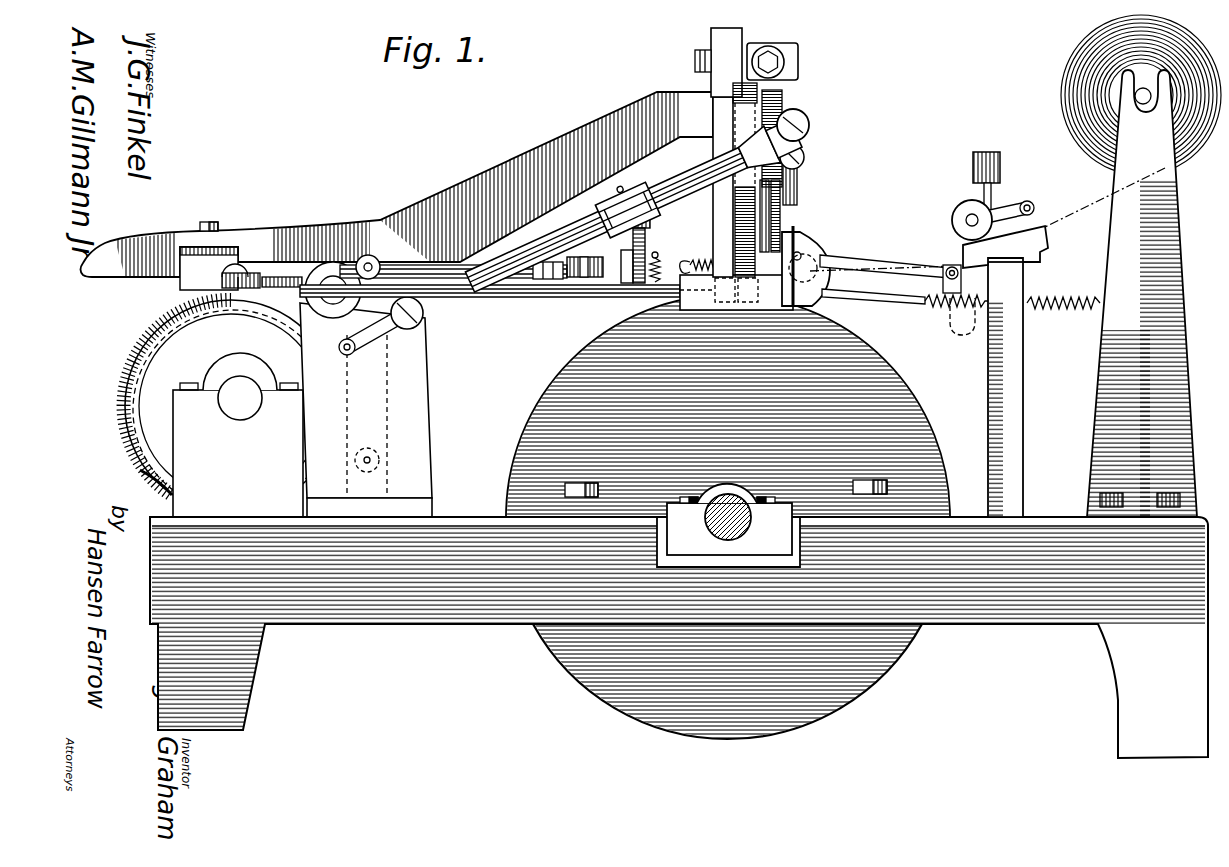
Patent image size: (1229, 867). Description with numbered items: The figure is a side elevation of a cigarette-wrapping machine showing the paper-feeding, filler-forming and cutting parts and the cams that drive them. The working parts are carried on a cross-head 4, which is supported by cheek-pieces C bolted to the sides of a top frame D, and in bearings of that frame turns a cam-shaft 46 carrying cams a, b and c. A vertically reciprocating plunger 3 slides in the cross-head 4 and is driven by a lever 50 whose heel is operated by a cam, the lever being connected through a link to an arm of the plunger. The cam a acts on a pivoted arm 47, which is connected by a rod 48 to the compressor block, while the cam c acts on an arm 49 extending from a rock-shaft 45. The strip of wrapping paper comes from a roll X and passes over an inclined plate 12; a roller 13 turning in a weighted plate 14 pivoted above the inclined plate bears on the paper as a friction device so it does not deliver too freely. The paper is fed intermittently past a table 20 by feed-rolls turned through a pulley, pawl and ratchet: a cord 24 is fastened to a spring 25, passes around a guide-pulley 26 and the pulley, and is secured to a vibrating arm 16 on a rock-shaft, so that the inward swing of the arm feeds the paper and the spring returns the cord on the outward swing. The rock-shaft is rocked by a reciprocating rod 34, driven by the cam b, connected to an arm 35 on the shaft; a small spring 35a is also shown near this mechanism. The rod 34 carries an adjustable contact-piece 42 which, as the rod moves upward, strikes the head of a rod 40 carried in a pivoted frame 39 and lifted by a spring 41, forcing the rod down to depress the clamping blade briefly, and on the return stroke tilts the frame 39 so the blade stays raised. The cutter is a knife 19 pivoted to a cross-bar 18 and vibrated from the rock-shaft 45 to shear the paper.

The plunger 3 is at (742, 44).
The cross-head 4 is at (713, 202).
The inclined plate 12 is at (1047, 225).
The roller 13 is at (953, 215).
The weighted plate 14 is at (1008, 208).
The vibrating arm 16 is at (798, 197).
The cross-bar 18 is at (838, 262).
The knife 19 is at (802, 250).
The table 20 is at (896, 296).
The cord 24 is at (906, 264).
The spring 25 is at (946, 318).
The guide-pulley 26 is at (980, 266).
The reciprocating rod 34 is at (632, 205).
The arm 35 is at (808, 133).
The spring 35a is at (657, 254).
The pivoted frame 39 is at (617, 247).
The rod 40 is at (631, 233).
The spring 41 is at (630, 270).
The adjustable contact-piece 42 is at (656, 216).
The rock-shaft 45 is at (514, 292).
The cam-shaft 46 is at (238, 435).
The pivoted arm 47 is at (383, 345).
The rod 48 is at (400, 266).
The arm 49 is at (248, 280).
The lever 50 is at (440, 208).
The cam a is at (157, 483).
The cam b is at (228, 406).
The cam c is at (233, 410).
The cheek-pieces C is at (542, 392).
The top frame D is at (465, 517).
The roll X is at (1068, 68).